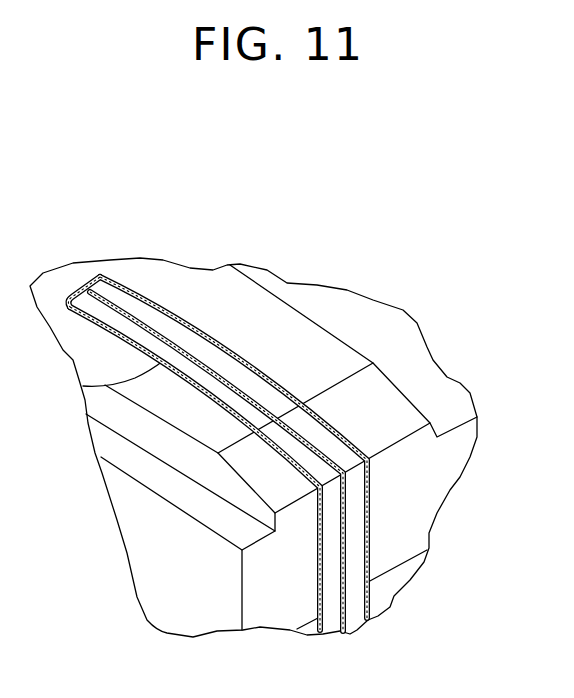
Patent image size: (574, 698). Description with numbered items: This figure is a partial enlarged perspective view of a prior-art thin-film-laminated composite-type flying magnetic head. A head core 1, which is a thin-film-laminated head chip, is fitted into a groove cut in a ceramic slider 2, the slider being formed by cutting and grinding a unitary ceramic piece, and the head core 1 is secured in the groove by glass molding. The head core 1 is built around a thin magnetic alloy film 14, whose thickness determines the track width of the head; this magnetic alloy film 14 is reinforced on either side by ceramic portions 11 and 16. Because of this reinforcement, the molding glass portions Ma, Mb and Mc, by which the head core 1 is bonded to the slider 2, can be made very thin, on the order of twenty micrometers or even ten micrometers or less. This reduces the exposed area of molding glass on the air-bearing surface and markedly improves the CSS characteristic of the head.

The head core 1 is at (271, 478).
The ceramic slider 2 is at (433, 475).
The ceramic portion 11 is at (332, 623).
The magnetic alloy film 14 is at (354, 607).
The ceramic portion 16 is at (372, 616).
The molding glass portion Ma is at (187, 313).
The molding glass portion Mb is at (85, 385).
The molding glass portion Mc is at (91, 273).